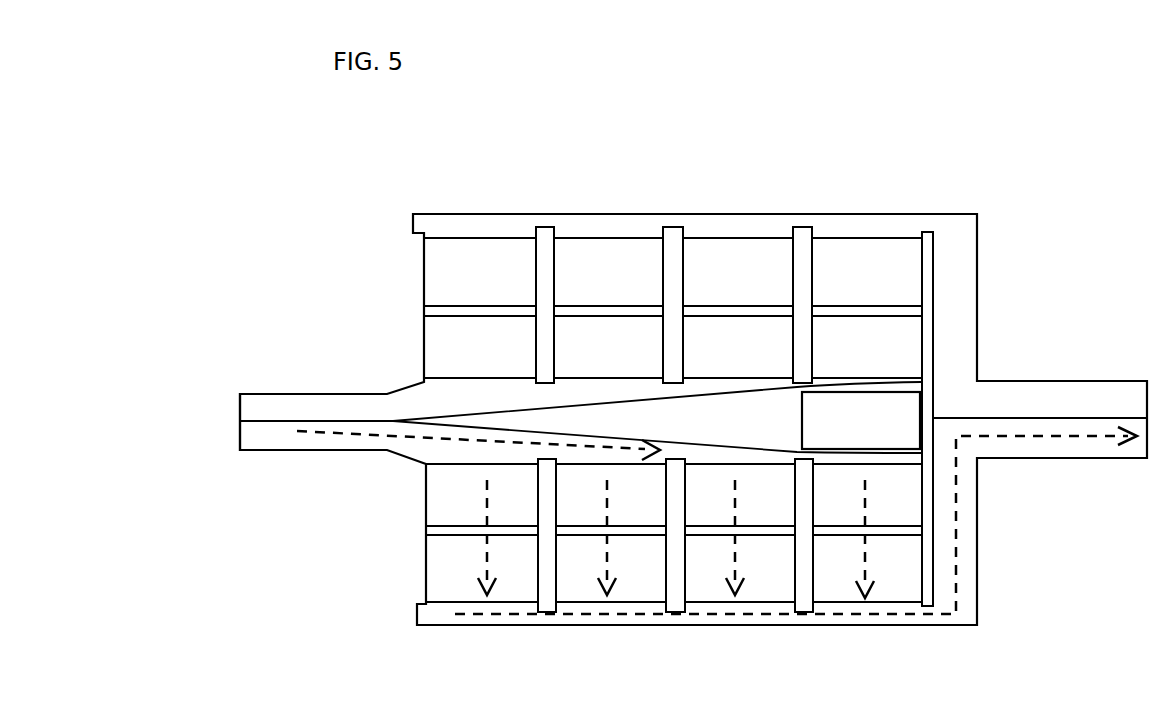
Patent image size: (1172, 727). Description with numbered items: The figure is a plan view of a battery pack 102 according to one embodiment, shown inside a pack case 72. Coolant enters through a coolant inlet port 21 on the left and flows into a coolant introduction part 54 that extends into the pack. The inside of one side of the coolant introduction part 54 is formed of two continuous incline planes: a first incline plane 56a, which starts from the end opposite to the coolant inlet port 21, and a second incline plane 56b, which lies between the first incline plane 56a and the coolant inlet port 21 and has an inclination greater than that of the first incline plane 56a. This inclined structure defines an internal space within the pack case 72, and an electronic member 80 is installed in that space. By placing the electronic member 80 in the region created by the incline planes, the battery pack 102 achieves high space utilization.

The battery pack 102 is at (311, 195).
The pack case 72 is at (978, 226).
The coolant inlet port 21 is at (238, 433).
The coolant introduction part 54 is at (383, 435).
The first incline plane 56a is at (875, 455).
The second incline plane 56b is at (680, 442).
The electronic member 80 is at (905, 406).